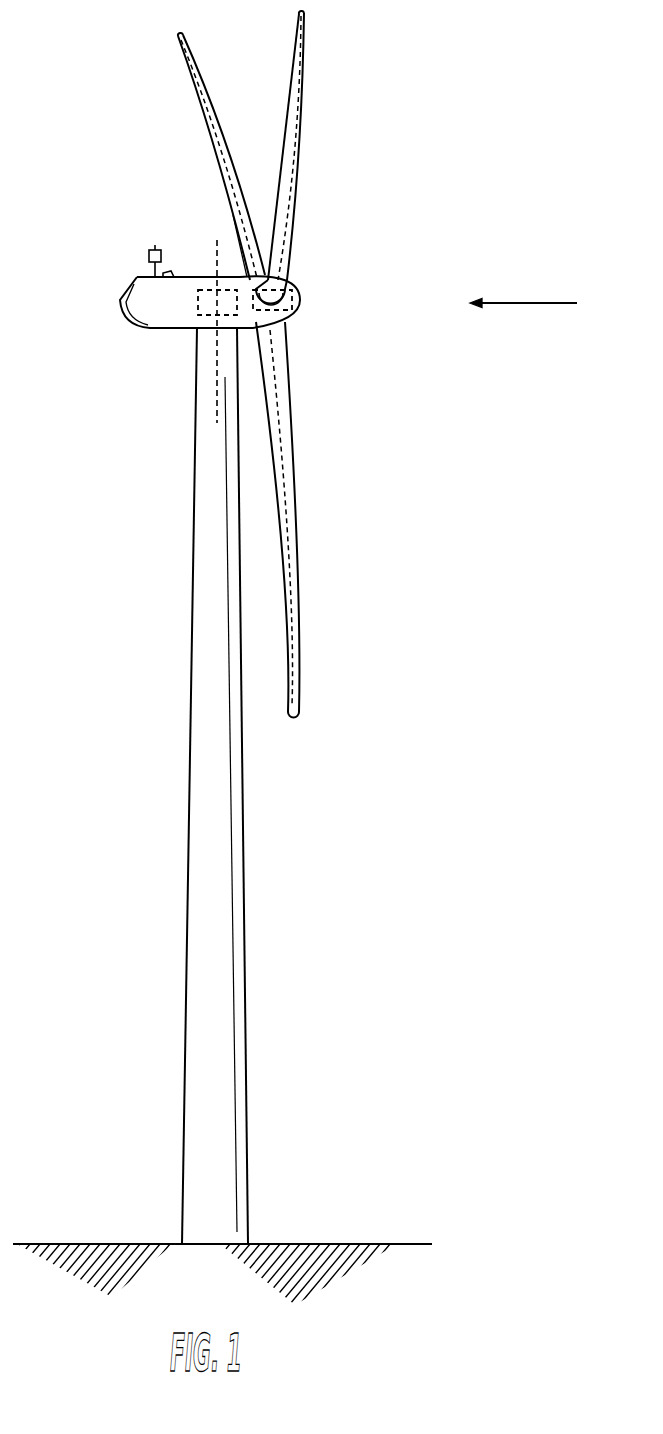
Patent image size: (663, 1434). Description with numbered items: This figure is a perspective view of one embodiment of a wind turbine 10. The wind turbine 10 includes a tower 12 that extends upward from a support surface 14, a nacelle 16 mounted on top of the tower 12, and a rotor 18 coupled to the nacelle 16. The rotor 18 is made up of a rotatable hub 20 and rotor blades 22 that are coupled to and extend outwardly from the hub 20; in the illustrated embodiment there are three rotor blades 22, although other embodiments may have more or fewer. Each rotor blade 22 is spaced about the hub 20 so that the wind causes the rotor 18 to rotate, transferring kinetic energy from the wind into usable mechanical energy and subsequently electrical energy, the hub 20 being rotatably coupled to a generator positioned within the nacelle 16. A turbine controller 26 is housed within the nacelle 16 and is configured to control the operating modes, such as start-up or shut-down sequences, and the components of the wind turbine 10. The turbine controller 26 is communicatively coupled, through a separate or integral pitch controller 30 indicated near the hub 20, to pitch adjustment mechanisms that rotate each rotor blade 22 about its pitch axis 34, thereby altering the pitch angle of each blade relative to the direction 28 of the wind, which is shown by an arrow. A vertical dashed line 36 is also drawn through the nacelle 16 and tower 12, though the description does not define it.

The wind turbine 10 is at (405, 98).
The tower 12 is at (200, 909).
The support surface 14 is at (98, 1243).
The nacelle 16 is at (170, 330).
The rotor 18 is at (302, 268).
The rotatable hub 20 is at (294, 293).
The rotor blade 22 is at (282, 137).
The turbine controller 26 is at (200, 282).
The direction of the wind 28 is at (516, 303).
The pitch controller 30 is at (300, 300).
The pitch axis 34 is at (213, 152).
The yaw axis 36 is at (213, 370).